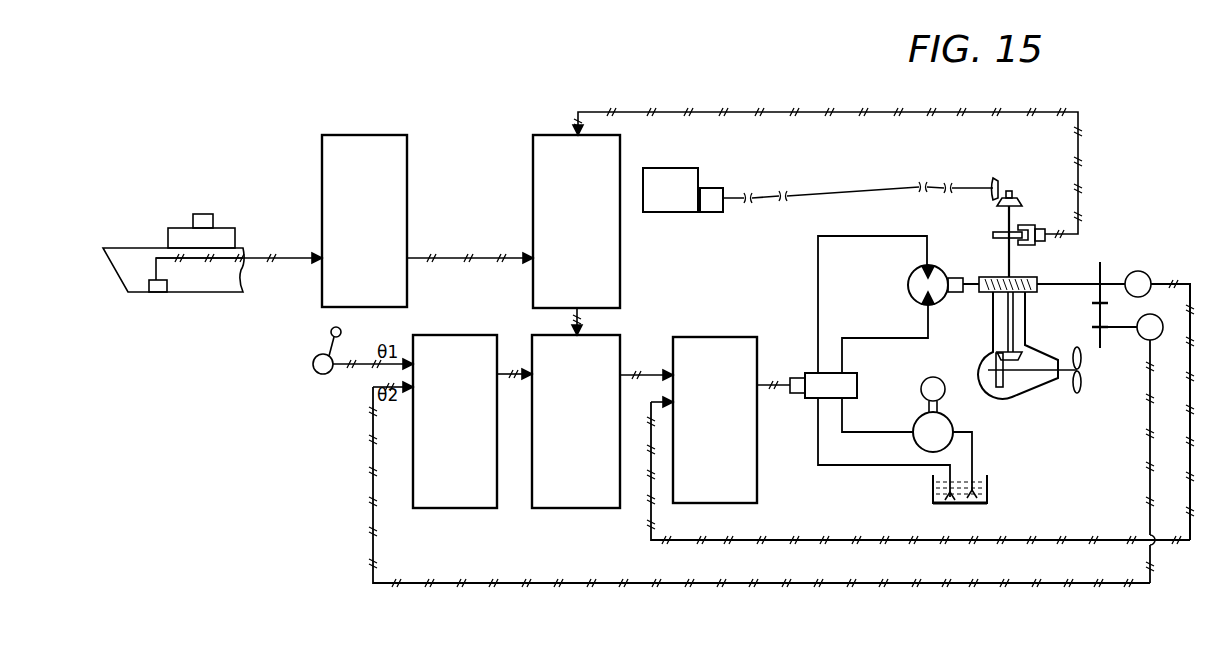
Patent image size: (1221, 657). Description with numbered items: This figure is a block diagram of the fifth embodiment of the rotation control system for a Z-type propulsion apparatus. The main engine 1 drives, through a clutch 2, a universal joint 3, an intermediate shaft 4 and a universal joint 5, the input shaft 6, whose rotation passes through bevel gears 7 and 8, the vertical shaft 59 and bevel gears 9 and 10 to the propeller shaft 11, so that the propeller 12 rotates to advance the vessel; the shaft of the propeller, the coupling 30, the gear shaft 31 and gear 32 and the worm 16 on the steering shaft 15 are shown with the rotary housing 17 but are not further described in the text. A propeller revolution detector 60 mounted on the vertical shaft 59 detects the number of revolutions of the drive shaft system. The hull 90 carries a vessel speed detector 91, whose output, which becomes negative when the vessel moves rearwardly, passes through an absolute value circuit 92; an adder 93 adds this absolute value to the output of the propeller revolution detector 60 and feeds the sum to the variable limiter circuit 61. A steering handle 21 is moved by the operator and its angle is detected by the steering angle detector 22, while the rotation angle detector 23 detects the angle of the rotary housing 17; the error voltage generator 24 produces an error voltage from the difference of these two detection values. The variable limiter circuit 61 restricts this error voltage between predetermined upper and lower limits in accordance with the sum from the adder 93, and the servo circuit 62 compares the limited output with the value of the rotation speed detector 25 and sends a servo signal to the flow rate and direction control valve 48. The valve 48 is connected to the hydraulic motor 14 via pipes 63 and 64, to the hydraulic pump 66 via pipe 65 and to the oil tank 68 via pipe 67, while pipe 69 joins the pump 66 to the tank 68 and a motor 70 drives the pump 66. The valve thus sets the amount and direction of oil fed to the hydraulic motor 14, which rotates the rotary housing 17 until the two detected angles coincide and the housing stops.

The main engine 1 is at (683, 168).
The clutch 2 is at (718, 188).
The universal joint 3 is at (762, 196).
The intermediate shaft 4 is at (848, 194).
The universal joint 5 is at (925, 187).
The input shaft 6 is at (960, 188).
The bevel gear 7 is at (996, 178).
The bevel gear 8 is at (1013, 198).
The bevel gear 9 is at (1030, 352).
The bevel gear 10 is at (1008, 400).
The propeller shaft 11 is at (1048, 388).
The propeller 12 is at (1082, 393).
The hydraulic motor 14 is at (912, 279).
The steering shaft 15 is at (1032, 292).
The worm gear 16 is at (1030, 277).
The rotary housing 17 is at (993, 340).
The steering handle 21 is at (316, 357).
The steering angle detector 22 is at (320, 375).
The rotation angle detector 23 is at (1162, 316).
The error voltage generator 24 is at (470, 330).
The rotation speed detector 25 is at (1140, 272).
The coupling 30 is at (972, 292).
The gear shaft 31 is at (1102, 262).
The gear 32 is at (1102, 348).
The flow rate and direction control valve 48 is at (857, 383).
The vertical shaft 59 is at (1009, 258).
The propeller revolution detector 60 is at (1025, 226).
The variable limiter circuit 61 is at (620, 348).
The servo circuit 62 is at (725, 337).
The pipe 63 is at (818, 285).
The pipe 64 is at (868, 338).
The pipe 65 is at (877, 432).
The hydraulic pump 66 is at (947, 428).
The pipe 67 is at (870, 466).
The oil tank 68 is at (990, 491).
The pipe 69 is at (975, 454).
The motor 70 is at (933, 377).
The hull 90 is at (157, 292).
The vessel speed detector 91 is at (150, 276).
The absolute value circuit 92 is at (407, 137).
The adder 93 is at (533, 166).